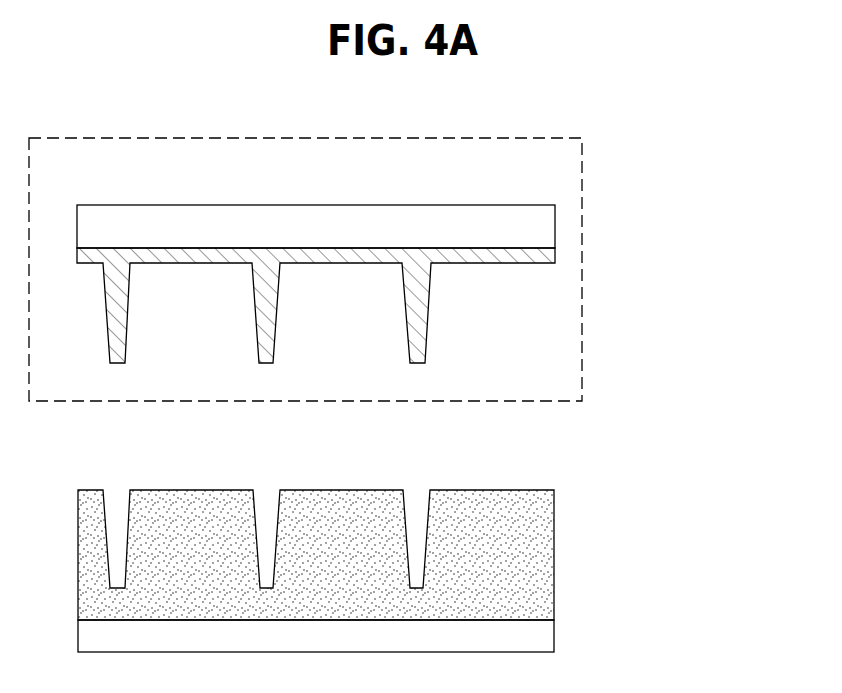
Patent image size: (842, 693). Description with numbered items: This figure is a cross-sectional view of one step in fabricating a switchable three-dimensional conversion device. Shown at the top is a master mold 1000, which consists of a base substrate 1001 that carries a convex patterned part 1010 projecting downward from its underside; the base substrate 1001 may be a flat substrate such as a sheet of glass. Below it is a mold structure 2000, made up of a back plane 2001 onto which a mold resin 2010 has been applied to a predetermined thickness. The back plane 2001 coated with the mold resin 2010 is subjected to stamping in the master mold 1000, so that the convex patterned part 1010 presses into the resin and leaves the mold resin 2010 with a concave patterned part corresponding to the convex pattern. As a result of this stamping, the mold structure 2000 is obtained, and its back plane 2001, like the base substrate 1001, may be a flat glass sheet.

The master mold 1000 is at (428, 284).
The base substrate 1001 is at (524, 226).
The convex patterned part 1010 is at (415, 323).
The mold structure 2000 is at (429, 571).
The mold resin 2010 is at (525, 548).
The back plane 2001 is at (525, 635).